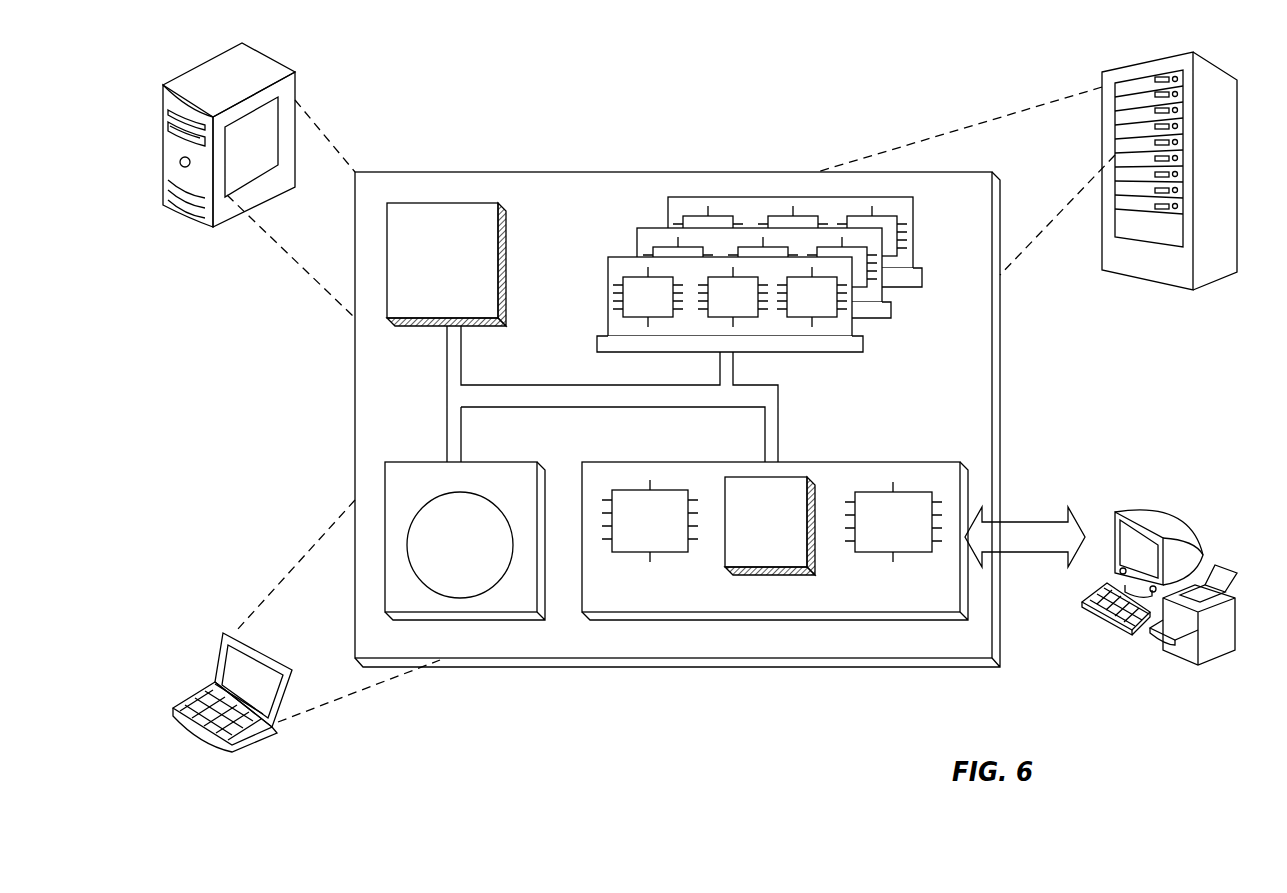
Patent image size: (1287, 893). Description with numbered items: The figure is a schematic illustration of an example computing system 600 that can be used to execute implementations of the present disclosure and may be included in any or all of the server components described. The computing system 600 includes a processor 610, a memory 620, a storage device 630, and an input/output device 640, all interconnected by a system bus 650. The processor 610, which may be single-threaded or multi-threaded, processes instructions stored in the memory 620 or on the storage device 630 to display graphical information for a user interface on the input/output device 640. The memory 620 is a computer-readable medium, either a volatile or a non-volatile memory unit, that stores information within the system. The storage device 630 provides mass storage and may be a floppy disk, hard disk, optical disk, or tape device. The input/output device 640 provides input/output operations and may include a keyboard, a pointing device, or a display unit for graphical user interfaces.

The computing system 600 is at (521, 104).
The processor 610 is at (446, 264).
The memory 620 is at (918, 318).
The storage device 630 is at (465, 541).
The input/output device 640 is at (1113, 513).
The system bus 650 is at (607, 398).